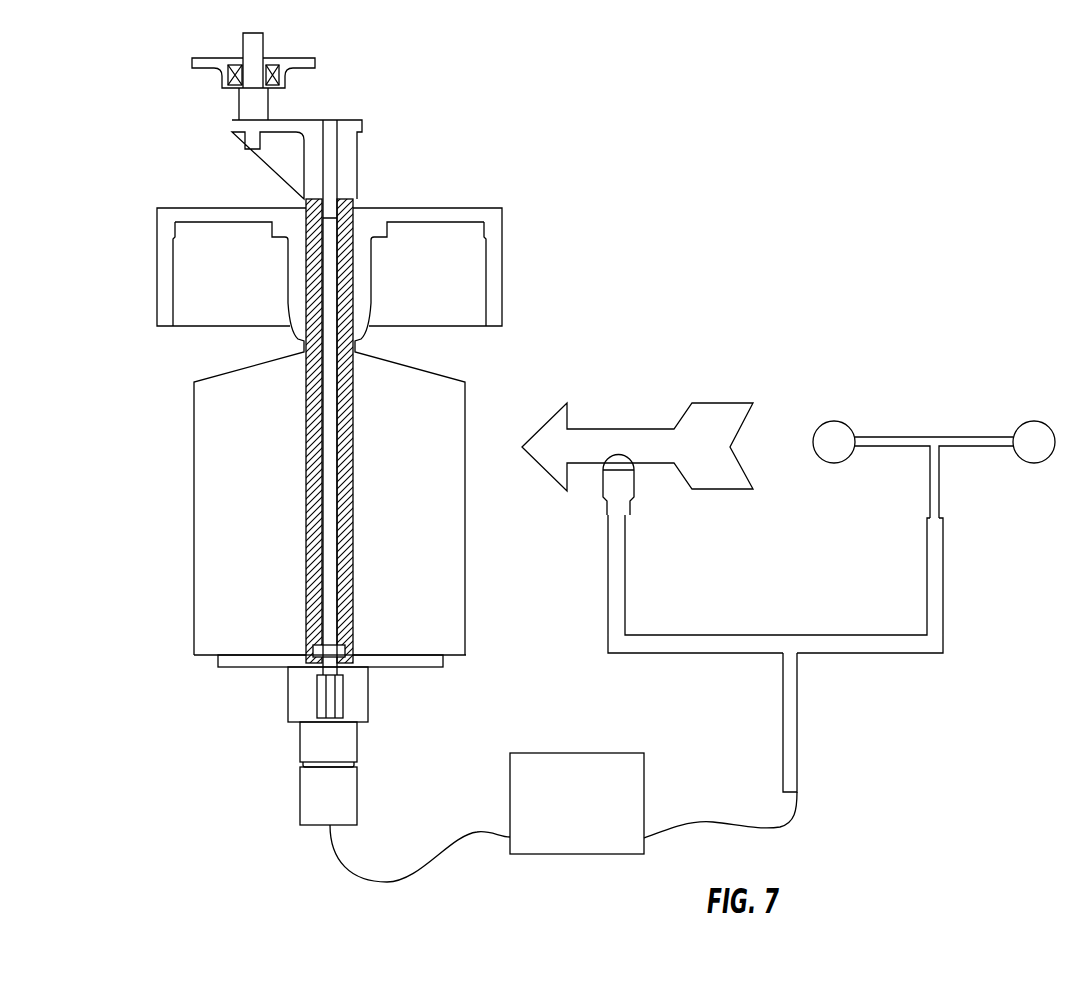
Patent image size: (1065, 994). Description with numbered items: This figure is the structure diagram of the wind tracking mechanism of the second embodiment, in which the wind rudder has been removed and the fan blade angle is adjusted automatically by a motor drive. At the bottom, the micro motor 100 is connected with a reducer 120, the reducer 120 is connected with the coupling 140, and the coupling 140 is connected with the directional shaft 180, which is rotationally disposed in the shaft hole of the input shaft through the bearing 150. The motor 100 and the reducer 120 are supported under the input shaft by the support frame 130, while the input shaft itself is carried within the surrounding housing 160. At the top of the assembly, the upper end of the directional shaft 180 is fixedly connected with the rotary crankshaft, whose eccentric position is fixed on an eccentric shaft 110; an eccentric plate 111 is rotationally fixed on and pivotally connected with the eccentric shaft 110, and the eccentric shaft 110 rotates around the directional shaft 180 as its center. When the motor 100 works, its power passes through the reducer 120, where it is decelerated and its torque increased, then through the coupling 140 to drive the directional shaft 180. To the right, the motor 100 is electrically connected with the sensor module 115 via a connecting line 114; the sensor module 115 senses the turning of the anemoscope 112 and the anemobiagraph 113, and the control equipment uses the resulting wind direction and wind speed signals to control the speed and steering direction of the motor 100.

The motor 100 is at (345, 798).
The eccentric shaft 110 is at (247, 102).
The eccentric plate 111 is at (295, 63).
The anemoscope 112 is at (712, 418).
The anemobiagraph 113 is at (834, 421).
The tube 114 is at (783, 675).
The sensor module 115 is at (600, 768).
The reducer 120 is at (348, 742).
The support frame 130 is at (368, 705).
The coupling 140 is at (318, 695).
The bearing 150 is at (343, 667).
The housing 160 is at (457, 578).
The directional shaft 180 is at (347, 157).